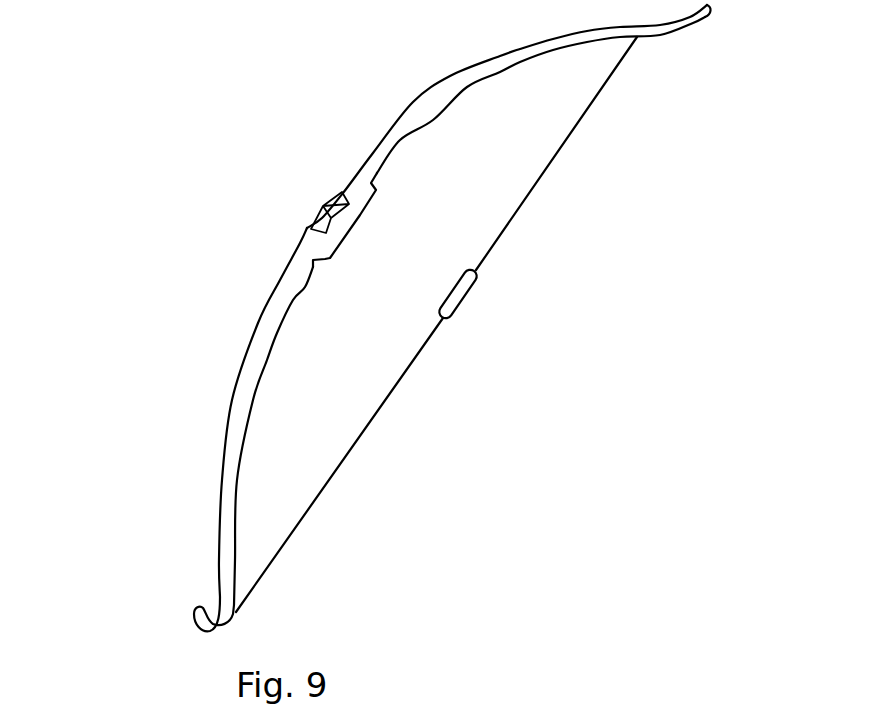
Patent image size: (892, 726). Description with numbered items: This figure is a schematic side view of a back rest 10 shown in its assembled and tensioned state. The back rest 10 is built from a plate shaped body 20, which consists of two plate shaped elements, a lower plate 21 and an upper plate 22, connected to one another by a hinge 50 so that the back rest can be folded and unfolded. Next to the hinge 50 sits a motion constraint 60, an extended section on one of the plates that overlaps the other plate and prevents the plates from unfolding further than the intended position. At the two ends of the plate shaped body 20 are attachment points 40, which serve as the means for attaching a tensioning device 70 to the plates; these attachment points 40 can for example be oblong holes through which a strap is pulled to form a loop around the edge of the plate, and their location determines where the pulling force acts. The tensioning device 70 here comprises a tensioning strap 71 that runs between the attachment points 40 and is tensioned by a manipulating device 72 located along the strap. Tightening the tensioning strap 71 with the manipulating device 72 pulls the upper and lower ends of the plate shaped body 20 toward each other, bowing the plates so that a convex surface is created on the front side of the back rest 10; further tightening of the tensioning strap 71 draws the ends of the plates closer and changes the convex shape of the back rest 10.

The back rest 10 is at (230, 118).
The plate shaped body 20 is at (245, 328).
The lower plate 21 is at (238, 401).
The upper plate 22 is at (420, 100).
The attachment points 40 is at (642, 42).
The hinge 50 is at (302, 213).
The motion constraint 60 is at (357, 200).
The tensioning device 70 is at (463, 347).
The tensioning strap 71 is at (553, 157).
The manipulating device 72 is at (473, 283).